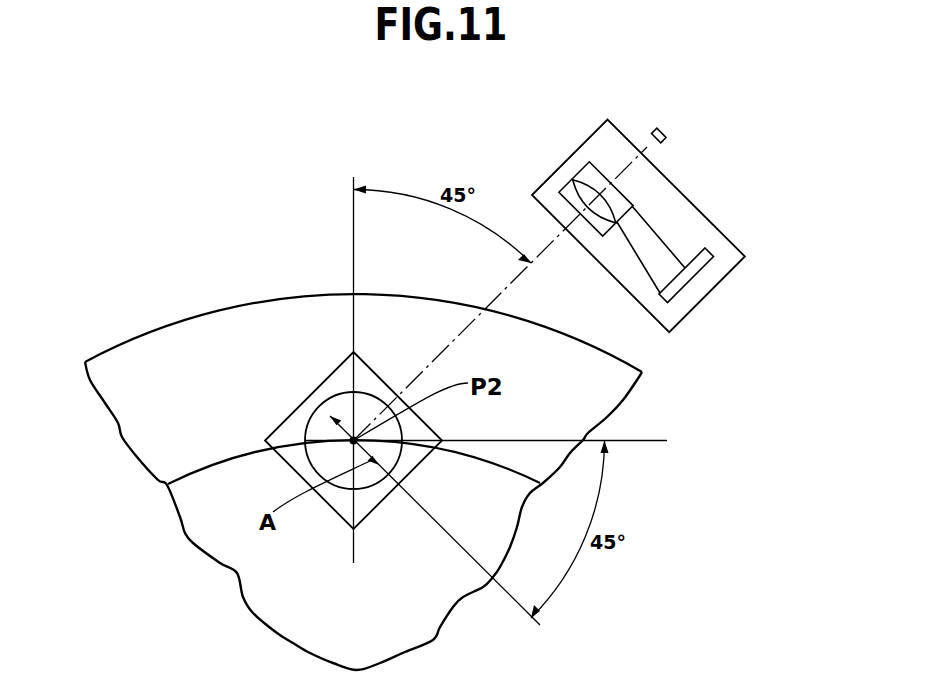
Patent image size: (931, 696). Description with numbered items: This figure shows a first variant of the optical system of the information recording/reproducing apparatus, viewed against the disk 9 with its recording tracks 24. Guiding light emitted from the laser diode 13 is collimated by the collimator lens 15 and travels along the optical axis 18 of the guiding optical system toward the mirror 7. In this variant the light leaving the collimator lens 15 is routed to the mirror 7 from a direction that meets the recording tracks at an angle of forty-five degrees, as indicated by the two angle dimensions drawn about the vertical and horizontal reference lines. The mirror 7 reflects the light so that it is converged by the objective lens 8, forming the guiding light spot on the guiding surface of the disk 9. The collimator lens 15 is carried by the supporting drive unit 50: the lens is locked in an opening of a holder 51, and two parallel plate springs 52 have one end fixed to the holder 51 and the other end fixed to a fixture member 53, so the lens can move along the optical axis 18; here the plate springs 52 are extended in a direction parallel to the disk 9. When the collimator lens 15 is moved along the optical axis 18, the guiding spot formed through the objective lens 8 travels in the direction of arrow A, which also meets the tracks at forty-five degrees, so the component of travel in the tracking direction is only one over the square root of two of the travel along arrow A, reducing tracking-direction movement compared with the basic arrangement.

The mirror 7 is at (293, 411).
The objective lens 8 is at (370, 487).
The disk 9 is at (185, 321).
The laser diode 13 is at (650, 130).
The collimator lens 15 is at (578, 184).
The optical axis 18 is at (543, 252).
The tracks 24 is at (208, 466).
The supporting drive unit 50 is at (705, 295).
The holder 51 is at (627, 193).
The plate springs 52 is at (660, 238).
The fixture member 53 is at (707, 248).